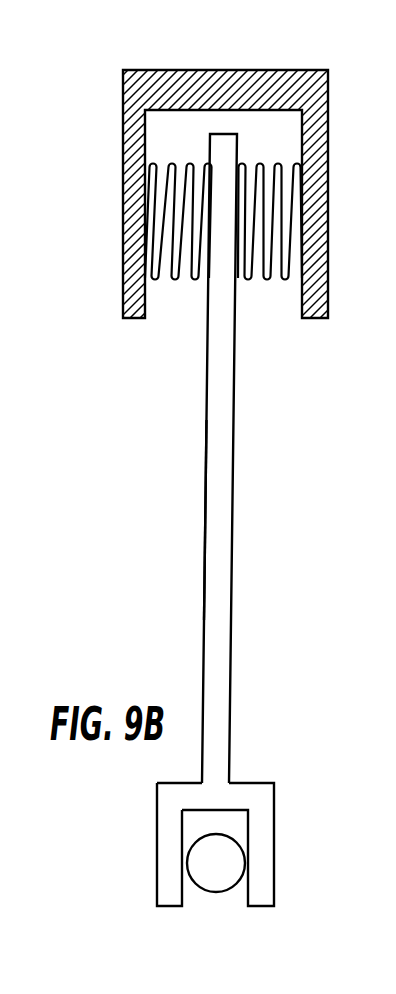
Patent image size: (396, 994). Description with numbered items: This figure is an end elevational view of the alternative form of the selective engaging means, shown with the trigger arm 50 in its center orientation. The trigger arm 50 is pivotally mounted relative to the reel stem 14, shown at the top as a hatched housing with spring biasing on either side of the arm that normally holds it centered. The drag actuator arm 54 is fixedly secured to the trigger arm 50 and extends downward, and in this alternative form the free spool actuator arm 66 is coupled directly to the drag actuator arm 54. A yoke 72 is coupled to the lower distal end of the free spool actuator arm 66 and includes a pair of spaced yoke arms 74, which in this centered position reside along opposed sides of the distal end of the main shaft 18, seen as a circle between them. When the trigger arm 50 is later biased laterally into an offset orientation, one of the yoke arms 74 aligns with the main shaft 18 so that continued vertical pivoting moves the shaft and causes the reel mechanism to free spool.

The reel stem 14 is at (262, 82).
The trigger arm 50 is at (225, 153).
The drag actuator arm 54 is at (232, 495).
The free spool actuator arm 66 is at (223, 566).
The yoke 72 is at (262, 783).
The yoke arms 74 is at (170, 906).
The main shaft 18 is at (187, 863).